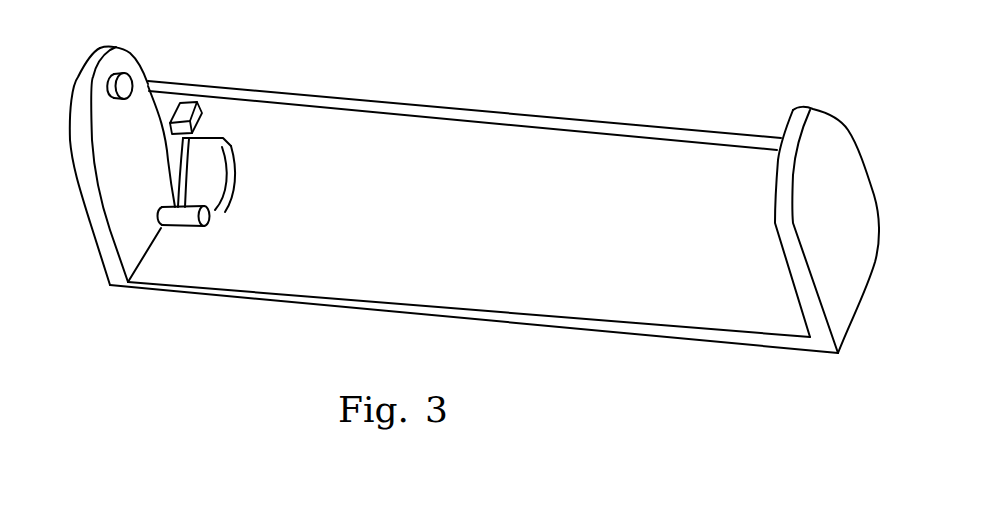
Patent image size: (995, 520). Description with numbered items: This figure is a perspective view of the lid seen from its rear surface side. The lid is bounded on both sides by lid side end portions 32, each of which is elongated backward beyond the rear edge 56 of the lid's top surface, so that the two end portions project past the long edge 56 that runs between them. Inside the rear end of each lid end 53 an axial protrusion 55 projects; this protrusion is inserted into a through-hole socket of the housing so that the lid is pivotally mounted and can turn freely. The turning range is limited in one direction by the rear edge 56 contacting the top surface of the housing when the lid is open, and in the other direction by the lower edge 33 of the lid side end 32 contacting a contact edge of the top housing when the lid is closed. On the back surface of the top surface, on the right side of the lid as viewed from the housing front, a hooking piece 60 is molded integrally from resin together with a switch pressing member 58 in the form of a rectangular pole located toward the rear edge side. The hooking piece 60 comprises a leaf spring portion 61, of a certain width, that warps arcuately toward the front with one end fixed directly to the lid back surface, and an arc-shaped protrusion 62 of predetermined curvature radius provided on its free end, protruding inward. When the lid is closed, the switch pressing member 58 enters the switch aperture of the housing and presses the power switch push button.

The lid side end portion 32 is at (78, 147).
The lower edge of the lid side end 33 is at (97, 238).
The lid end 53 is at (92, 58).
The axial protrusion 55 is at (130, 80).
The rear edge of the top surface 56 is at (354, 97).
The switch pressing member 58 is at (188, 102).
The hooking piece 60 is at (288, 172).
The leaf spring portion 61 is at (231, 190).
The arc-shaped protrusion 62 is at (210, 220).